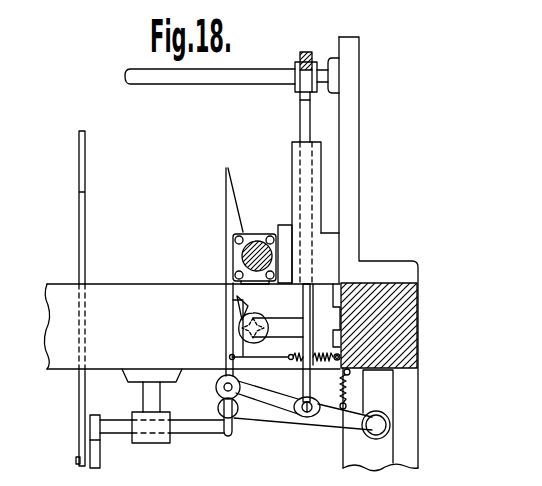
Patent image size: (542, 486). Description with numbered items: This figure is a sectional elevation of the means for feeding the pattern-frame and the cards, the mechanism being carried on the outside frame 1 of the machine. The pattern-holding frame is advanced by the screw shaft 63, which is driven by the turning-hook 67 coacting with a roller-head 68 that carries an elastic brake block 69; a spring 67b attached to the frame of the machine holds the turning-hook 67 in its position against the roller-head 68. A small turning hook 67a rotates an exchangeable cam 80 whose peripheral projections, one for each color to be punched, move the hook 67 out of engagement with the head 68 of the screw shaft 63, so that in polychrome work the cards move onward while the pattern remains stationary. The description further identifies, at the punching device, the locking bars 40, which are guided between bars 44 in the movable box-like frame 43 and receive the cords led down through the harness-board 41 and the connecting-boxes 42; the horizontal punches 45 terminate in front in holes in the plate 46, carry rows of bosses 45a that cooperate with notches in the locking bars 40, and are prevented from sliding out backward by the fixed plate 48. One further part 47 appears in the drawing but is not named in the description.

The outside frame 1 is at (371, 126).
The fixed plate 48 is at (153, 78).
The plate 46 is at (300, 120).
The slide column 47 is at (298, 167).
The bars 44 is at (86, 231).
The turning-hook 67 is at (229, 203).
The small turning hook 67a is at (236, 312).
The spring 67b is at (318, 342).
The roller-head 68 is at (270, 233).
The screw shaft 63 is at (236, 252).
The elastic brake block 69 is at (288, 228).
The exchangeable cam 80 is at (260, 320).
The locking bars 40 is at (271, 401).
The connecting-boxes 42 is at (272, 413).
The horizontal punches 45 is at (337, 412).
The bosses 45a is at (346, 396).
The harness-board 41 is at (380, 428).
The box-like frame 43 is at (98, 454).